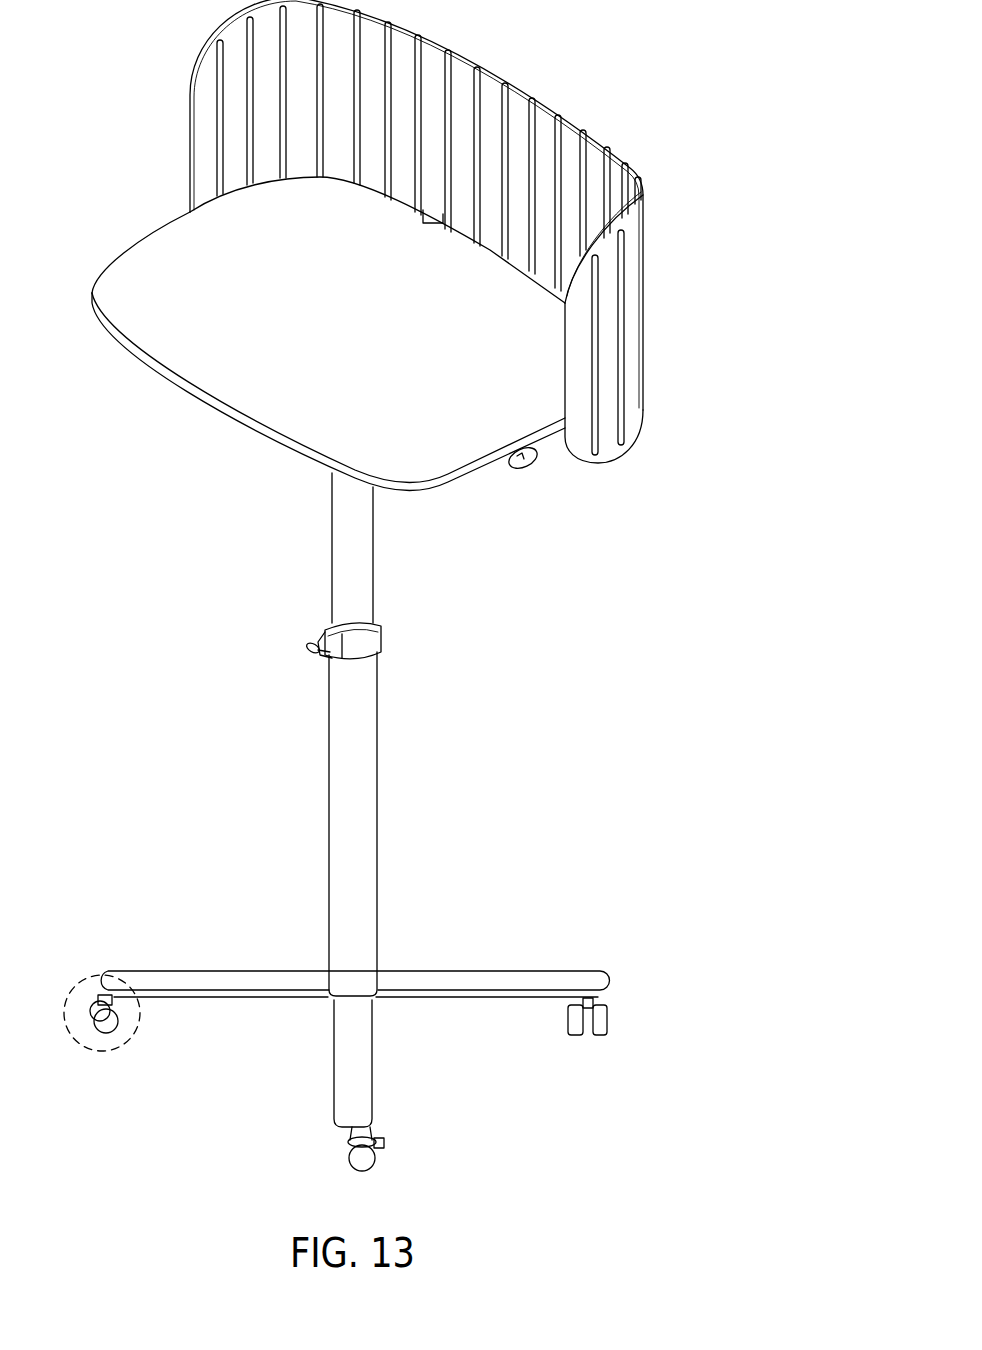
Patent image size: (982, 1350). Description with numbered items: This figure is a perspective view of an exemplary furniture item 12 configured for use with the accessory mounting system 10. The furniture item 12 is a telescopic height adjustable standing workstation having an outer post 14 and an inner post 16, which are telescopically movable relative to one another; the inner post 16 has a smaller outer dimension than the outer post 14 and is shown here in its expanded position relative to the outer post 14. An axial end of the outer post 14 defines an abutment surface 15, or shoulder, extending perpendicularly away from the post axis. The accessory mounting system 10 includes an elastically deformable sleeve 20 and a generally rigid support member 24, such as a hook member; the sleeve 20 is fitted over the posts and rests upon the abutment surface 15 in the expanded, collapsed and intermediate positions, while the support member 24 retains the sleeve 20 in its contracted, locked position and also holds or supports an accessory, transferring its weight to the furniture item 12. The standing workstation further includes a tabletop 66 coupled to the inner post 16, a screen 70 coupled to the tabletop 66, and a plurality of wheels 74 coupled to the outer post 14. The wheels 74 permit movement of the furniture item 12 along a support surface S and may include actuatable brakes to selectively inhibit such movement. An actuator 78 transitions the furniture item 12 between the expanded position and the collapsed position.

The accessory mounting system 10 is at (269, 617).
The furniture item 12 is at (572, 52).
The outer post 14 is at (355, 802).
The abutment surface 15 is at (328, 604).
The inner post 16 is at (360, 544).
The sleeve 20 is at (360, 645).
The support member 24 is at (316, 655).
The tabletop 66 is at (204, 352).
The screen 70 is at (608, 322).
The wheels 74 is at (606, 1054).
The actuator 78 is at (540, 476).
The support surface S is at (86, 986).